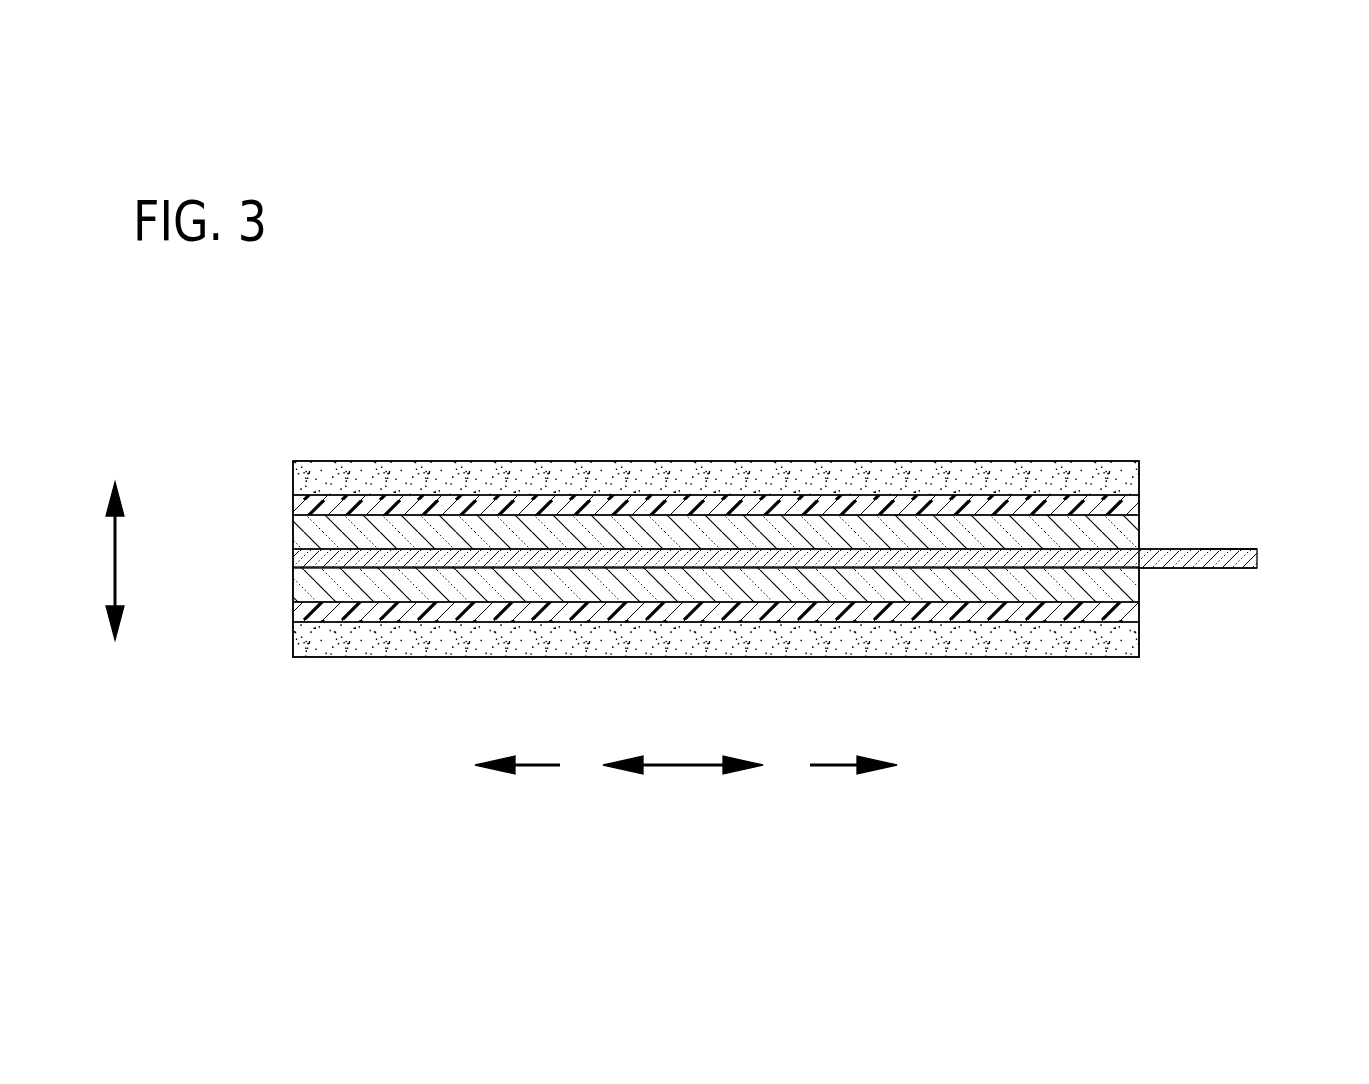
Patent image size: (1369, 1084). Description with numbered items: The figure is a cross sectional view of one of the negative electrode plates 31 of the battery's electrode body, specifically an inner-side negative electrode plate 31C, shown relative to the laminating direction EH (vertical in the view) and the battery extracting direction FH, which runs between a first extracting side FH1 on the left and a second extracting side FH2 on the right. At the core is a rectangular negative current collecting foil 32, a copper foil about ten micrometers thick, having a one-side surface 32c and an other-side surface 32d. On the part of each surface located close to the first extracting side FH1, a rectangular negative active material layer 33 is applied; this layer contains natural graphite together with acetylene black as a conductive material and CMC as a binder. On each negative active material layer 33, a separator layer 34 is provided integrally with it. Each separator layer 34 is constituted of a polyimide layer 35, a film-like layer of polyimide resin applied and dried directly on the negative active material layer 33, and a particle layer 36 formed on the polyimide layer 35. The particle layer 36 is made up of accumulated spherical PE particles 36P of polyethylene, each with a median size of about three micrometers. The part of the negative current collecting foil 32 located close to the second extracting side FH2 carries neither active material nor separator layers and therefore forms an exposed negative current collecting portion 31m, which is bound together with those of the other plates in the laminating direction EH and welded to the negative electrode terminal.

The negative electrode plate 31 is at (739, 493).
The inner-side negative electrode plate 31C is at (955, 382).
The negative current collecting portion 31m is at (1219, 549).
The negative current collecting foil 32 is at (1258, 556).
The one-side surface 32c is at (1168, 549).
The other-side surface 32d is at (1200, 568).
The negative active material layer 33 is at (293, 534).
The separator layer 34 is at (200, 422).
The polyimide layer 35 is at (293, 508).
The particle layer 36 is at (293, 475).
The PE particles 36P is at (399, 477).
The laminating direction EH is at (97, 561).
The battery extracting direction FH is at (683, 780).
The first extracting side FH1 is at (517, 780).
The second extracting side FH2 is at (853, 780).